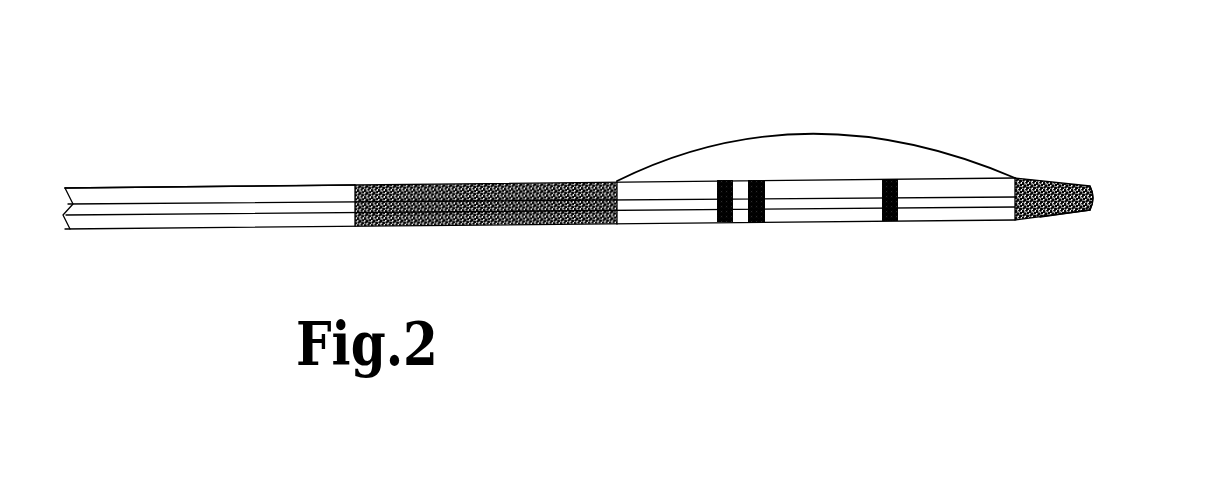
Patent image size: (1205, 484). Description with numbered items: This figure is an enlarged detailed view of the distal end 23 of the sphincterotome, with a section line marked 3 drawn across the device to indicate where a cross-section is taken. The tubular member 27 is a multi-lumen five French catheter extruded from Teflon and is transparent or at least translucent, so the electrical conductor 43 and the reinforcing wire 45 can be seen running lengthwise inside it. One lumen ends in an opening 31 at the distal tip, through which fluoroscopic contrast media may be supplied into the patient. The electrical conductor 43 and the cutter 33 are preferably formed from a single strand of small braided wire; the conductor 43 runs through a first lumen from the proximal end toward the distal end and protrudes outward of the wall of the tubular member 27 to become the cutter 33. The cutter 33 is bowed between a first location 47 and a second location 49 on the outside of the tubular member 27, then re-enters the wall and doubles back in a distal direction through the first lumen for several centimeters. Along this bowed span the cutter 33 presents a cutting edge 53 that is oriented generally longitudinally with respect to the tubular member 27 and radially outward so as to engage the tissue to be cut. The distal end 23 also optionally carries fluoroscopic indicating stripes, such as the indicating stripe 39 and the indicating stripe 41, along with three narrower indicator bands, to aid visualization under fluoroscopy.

The distal end 23 is at (1002, 268).
The tubular member 27 is at (168, 187).
The opening 31 is at (1102, 194).
The cutter 33 is at (940, 152).
The indicating stripe 39 is at (1060, 221).
The indicating stripe 41 is at (472, 184).
The electrical conductor 43 is at (252, 203).
The reinforcing wire 45 is at (166, 215).
The first location 47 is at (1018, 179).
The second location 49 is at (616, 183).
The cutting edge 53 is at (777, 138).
The section line 3- 3 is at (705, 137).